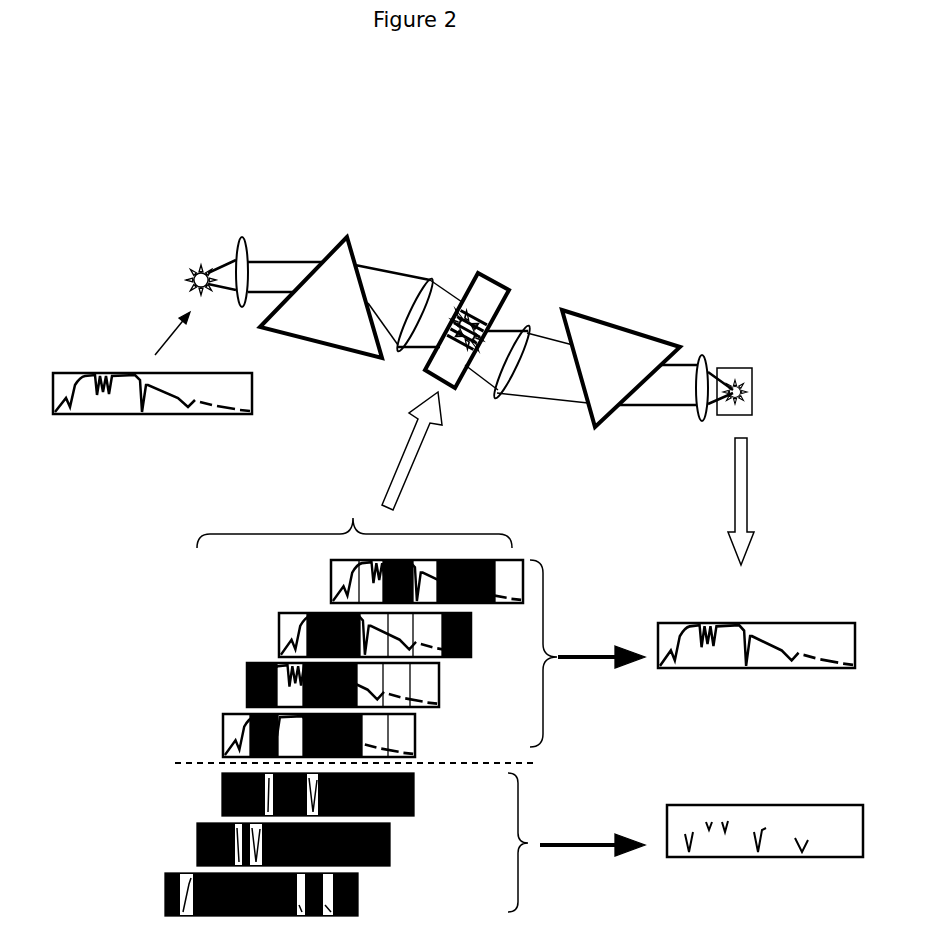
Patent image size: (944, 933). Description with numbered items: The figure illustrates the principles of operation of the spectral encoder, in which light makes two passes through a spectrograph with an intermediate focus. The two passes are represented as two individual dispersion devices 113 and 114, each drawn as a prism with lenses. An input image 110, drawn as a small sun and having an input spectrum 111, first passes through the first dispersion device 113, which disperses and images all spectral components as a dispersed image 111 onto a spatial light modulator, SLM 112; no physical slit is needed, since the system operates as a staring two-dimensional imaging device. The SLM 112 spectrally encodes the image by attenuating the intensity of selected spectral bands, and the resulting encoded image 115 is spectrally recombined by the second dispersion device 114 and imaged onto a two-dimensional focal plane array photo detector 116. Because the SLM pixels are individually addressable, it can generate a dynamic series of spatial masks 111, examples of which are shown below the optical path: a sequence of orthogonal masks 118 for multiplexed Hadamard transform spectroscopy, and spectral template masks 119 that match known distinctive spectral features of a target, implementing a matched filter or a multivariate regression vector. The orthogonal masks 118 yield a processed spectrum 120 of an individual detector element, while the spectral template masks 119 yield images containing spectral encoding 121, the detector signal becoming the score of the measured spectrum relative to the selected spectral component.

The input image 110 is at (188, 256).
The dispersed image 111 is at (452, 235).
The spatial light modulator 112 is at (420, 376).
The dispersion device 113 is at (326, 270).
The dispersion device 114 is at (612, 401).
The encoded image 115 is at (726, 362).
The photo detector 116 is at (782, 385).
The orthogonal mask 118 is at (313, 658).
The spectral template mask 119 is at (227, 844).
The processed spectrum 120 is at (778, 666).
The spectral encoding 121 is at (774, 851).